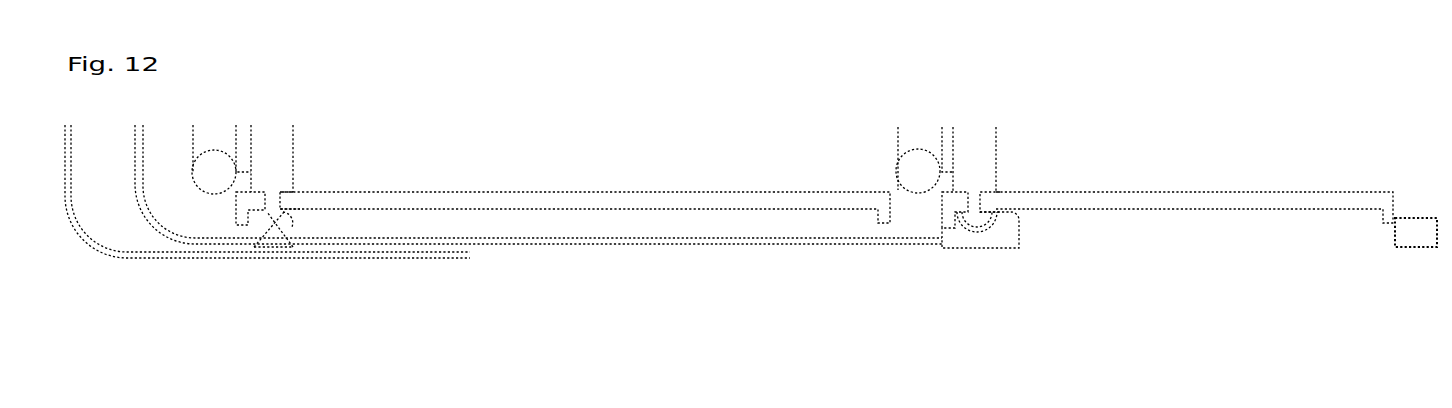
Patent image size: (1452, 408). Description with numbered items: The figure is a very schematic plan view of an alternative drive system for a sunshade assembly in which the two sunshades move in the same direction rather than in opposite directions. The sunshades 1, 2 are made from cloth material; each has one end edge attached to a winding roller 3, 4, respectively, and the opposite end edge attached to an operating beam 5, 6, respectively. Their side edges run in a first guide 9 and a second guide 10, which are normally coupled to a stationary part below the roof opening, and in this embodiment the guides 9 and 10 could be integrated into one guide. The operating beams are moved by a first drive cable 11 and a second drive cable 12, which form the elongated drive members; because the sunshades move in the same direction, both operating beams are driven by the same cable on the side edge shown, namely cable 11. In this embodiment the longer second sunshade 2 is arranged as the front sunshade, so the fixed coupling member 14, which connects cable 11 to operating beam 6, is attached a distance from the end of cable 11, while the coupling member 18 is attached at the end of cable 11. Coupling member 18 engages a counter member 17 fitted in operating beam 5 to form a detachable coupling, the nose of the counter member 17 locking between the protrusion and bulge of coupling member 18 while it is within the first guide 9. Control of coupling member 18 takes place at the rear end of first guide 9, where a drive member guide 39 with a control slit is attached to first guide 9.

The sunshade 1 is at (1208, 113).
The sunshade 2 is at (562, 128).
The winding roller 3 is at (915, 170).
The winding roller 4 is at (205, 180).
The operating beam 5 is at (978, 160).
The operating beam 6 is at (280, 173).
The first guide 9 is at (1225, 203).
The second guide 10 is at (545, 205).
The first drive cable 11 is at (657, 243).
The second drive cable 12 is at (200, 258).
The coupling member 14 is at (272, 238).
The counter member 17 is at (972, 220).
The coupling member 18 is at (994, 241).
The drive member guide 39 is at (1413, 237).